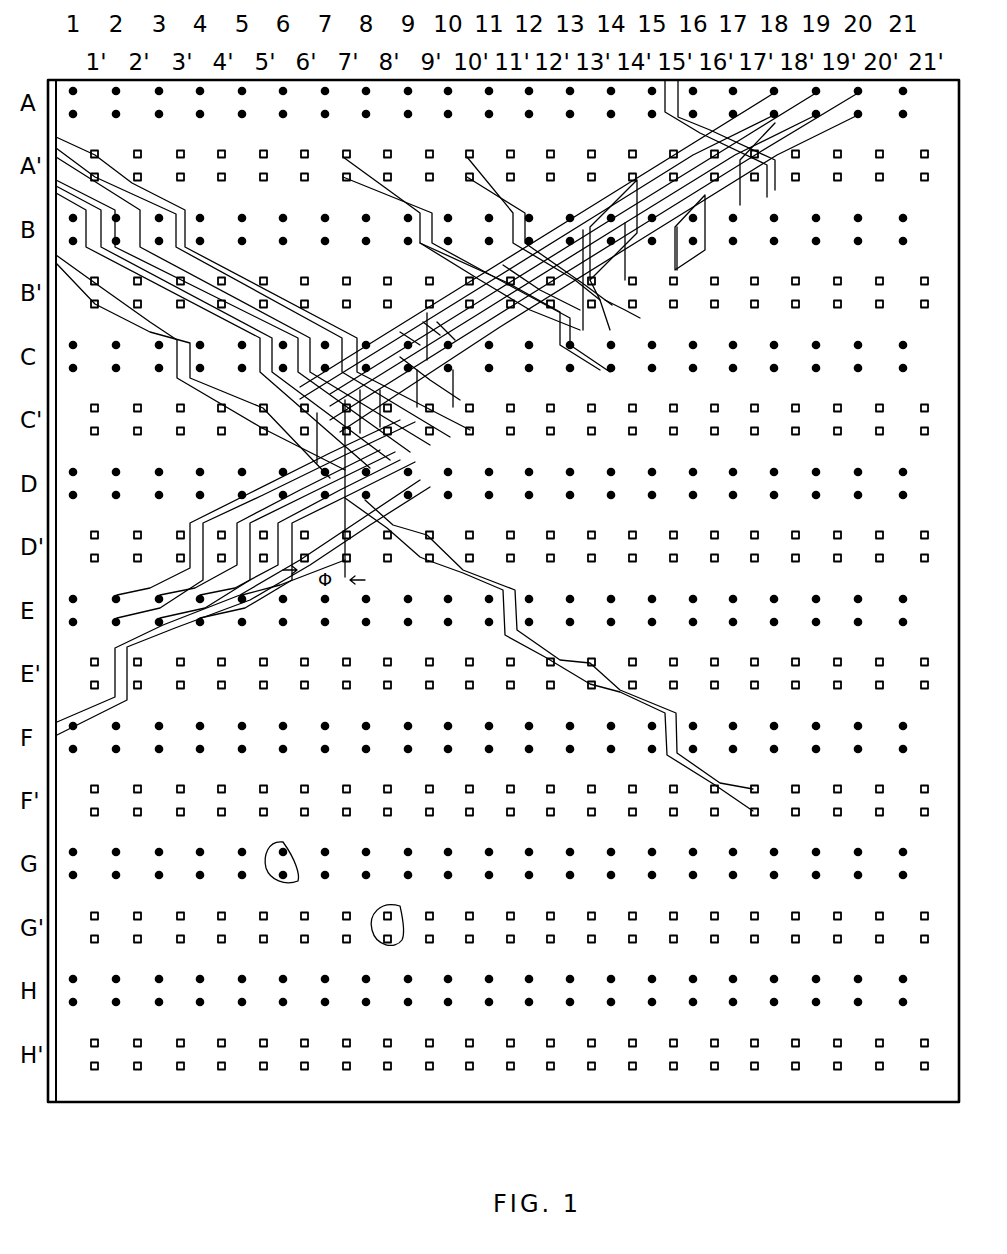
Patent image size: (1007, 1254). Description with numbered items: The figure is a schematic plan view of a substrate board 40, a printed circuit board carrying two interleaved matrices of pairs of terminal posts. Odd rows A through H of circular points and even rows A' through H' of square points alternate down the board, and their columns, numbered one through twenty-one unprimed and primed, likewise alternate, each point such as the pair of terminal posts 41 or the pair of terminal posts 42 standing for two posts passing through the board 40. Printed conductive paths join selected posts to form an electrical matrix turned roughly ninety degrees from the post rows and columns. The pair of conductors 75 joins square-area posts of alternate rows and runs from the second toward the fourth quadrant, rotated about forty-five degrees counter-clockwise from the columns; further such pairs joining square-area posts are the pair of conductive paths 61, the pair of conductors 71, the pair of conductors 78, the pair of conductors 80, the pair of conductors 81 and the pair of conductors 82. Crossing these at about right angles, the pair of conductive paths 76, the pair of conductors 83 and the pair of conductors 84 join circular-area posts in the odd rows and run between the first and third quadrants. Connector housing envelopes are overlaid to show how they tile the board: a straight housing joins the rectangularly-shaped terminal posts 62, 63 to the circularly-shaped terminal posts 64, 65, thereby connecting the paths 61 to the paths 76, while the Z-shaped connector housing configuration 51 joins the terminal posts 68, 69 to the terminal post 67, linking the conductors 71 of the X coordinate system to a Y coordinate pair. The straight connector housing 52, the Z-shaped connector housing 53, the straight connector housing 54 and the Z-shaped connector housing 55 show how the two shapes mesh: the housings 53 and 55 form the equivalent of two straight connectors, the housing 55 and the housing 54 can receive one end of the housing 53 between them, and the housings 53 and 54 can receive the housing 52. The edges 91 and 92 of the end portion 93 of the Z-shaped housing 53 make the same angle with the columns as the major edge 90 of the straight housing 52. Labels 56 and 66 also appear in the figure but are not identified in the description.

The substrate board 40 is at (197, 1085).
The pair of terminal posts 41 is at (298, 881).
The pair of terminal posts 42 is at (400, 906).
The Z-shaped connector housing configuration 51 is at (583, 330).
The straight connector housing 52 is at (460, 290).
The Z-shaped connector housing 53 is at (400, 357).
The straight connector housing 54 is at (470, 395).
The Z-shaped connector housing 55 is at (332, 437).
The conductor 56 is at (803, 145).
The pair of conductive paths 61 is at (697, 138).
The rectangularly-shaped terminal post 62 is at (767, 177).
The rectangularly-shaped terminal post 63 is at (758, 208).
The circularly-shaped terminal post 64 is at (695, 220).
The circularly-shaped terminal post 65 is at (690, 225).
The conductor segment 66 is at (600, 243).
The circular-shaped terminal post 67 is at (610, 218).
The terminal post 68 is at (607, 320).
The square-shaped terminal post 69 is at (617, 307).
The pair of conductors 71 is at (478, 200).
The pair of conductors 75 is at (543, 642).
The pair of conductive paths 76 is at (163, 637).
The pair of conductors 78 is at (392, 200).
The pair of conductors 80 is at (212, 250).
The pair of conductors 81 is at (166, 253).
The pair of conductors 82 is at (232, 325).
The pair of conductors 83 is at (240, 520).
The pair of conductors 84 is at (198, 518).
The major edge 90 is at (503, 265).
The edge 91 is at (400, 332).
The edge 92 is at (437, 322).
The end portion 93 is at (423, 322).